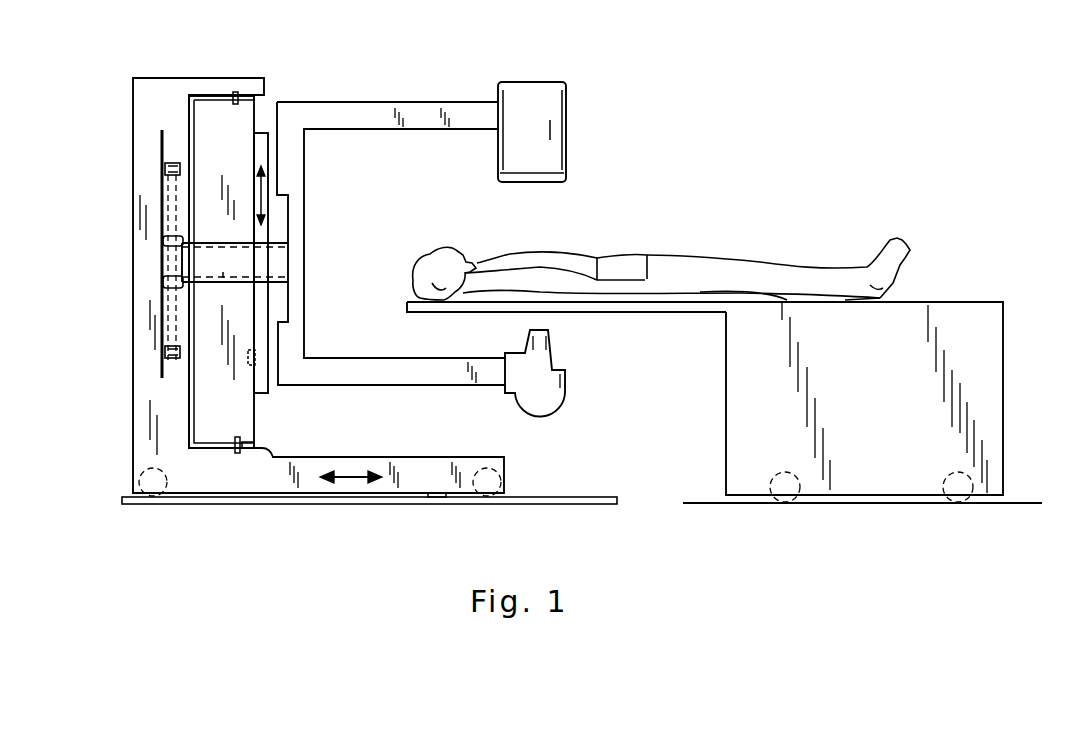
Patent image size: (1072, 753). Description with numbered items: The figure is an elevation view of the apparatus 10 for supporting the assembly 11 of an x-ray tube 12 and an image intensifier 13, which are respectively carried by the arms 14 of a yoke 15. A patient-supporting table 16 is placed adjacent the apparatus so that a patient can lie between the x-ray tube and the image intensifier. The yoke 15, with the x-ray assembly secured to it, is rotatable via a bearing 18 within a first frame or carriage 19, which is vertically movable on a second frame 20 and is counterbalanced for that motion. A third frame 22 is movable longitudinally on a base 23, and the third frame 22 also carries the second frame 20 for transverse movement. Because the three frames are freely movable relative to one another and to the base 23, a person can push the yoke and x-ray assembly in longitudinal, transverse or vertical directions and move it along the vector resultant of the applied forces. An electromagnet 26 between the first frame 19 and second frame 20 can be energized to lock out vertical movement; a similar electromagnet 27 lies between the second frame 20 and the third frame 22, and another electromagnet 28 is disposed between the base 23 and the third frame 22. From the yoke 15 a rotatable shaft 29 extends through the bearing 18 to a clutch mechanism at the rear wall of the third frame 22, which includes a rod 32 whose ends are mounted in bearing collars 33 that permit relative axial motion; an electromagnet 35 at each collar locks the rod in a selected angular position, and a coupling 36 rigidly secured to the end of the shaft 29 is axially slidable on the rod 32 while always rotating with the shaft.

The apparatus 10 is at (120, 76).
The assembly 11 is at (463, 90).
The x-ray tube 12 is at (566, 390).
The image intensifier 13 is at (565, 88).
The arms 14 is at (392, 112).
The yoke 15 is at (290, 151).
The patient-supporting table 16 is at (990, 365).
The bearing 18 is at (270, 237).
The first frame 19 is at (257, 150).
The second frame 20 is at (236, 151).
The third frame 22 is at (152, 97).
The base 23 is at (553, 500).
The electromagnet 26 is at (253, 357).
The electromagnet 27 is at (255, 445).
The electromagnet 28 is at (438, 497).
The rotatable shaft 29 is at (223, 272).
The rod 32 is at (162, 205).
The bearing collars 33 is at (165, 170).
The electromagnet 35 is at (163, 352).
The coupling 36 is at (163, 282).